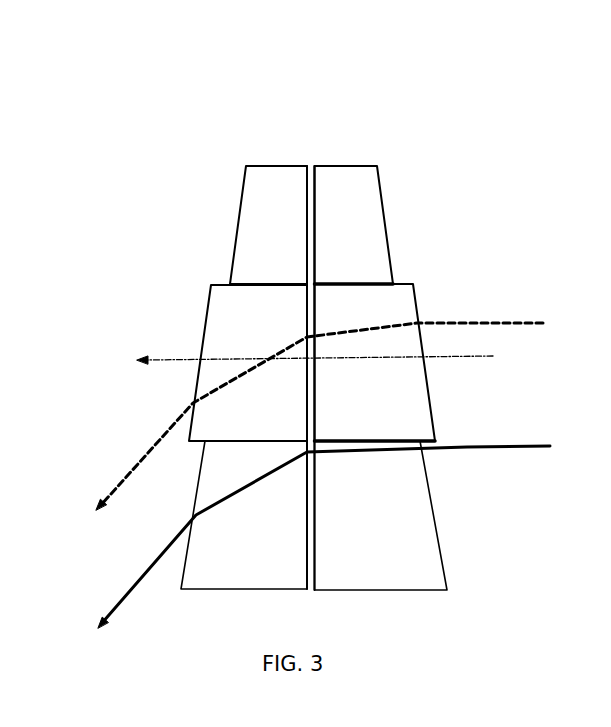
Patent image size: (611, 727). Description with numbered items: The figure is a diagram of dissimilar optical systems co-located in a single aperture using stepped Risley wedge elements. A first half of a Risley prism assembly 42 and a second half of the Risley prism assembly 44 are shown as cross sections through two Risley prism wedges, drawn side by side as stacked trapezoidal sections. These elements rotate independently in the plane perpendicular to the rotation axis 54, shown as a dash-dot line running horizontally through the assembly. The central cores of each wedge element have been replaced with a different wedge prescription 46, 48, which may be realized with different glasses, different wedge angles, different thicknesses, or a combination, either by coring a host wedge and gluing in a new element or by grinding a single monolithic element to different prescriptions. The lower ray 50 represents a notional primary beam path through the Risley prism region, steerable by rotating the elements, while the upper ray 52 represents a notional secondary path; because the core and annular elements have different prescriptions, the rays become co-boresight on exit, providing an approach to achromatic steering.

The first half of the Risley prism assembly 42 is at (278, 180).
The second half of the Risley prism assembly 44 is at (340, 180).
The different wedge prescription 46 is at (228, 318).
The different wedge prescription 48 is at (403, 290).
The lower ray 50 is at (345, 532).
The upper ray 52 is at (340, 410).
The rotation axis 54 is at (336, 356).